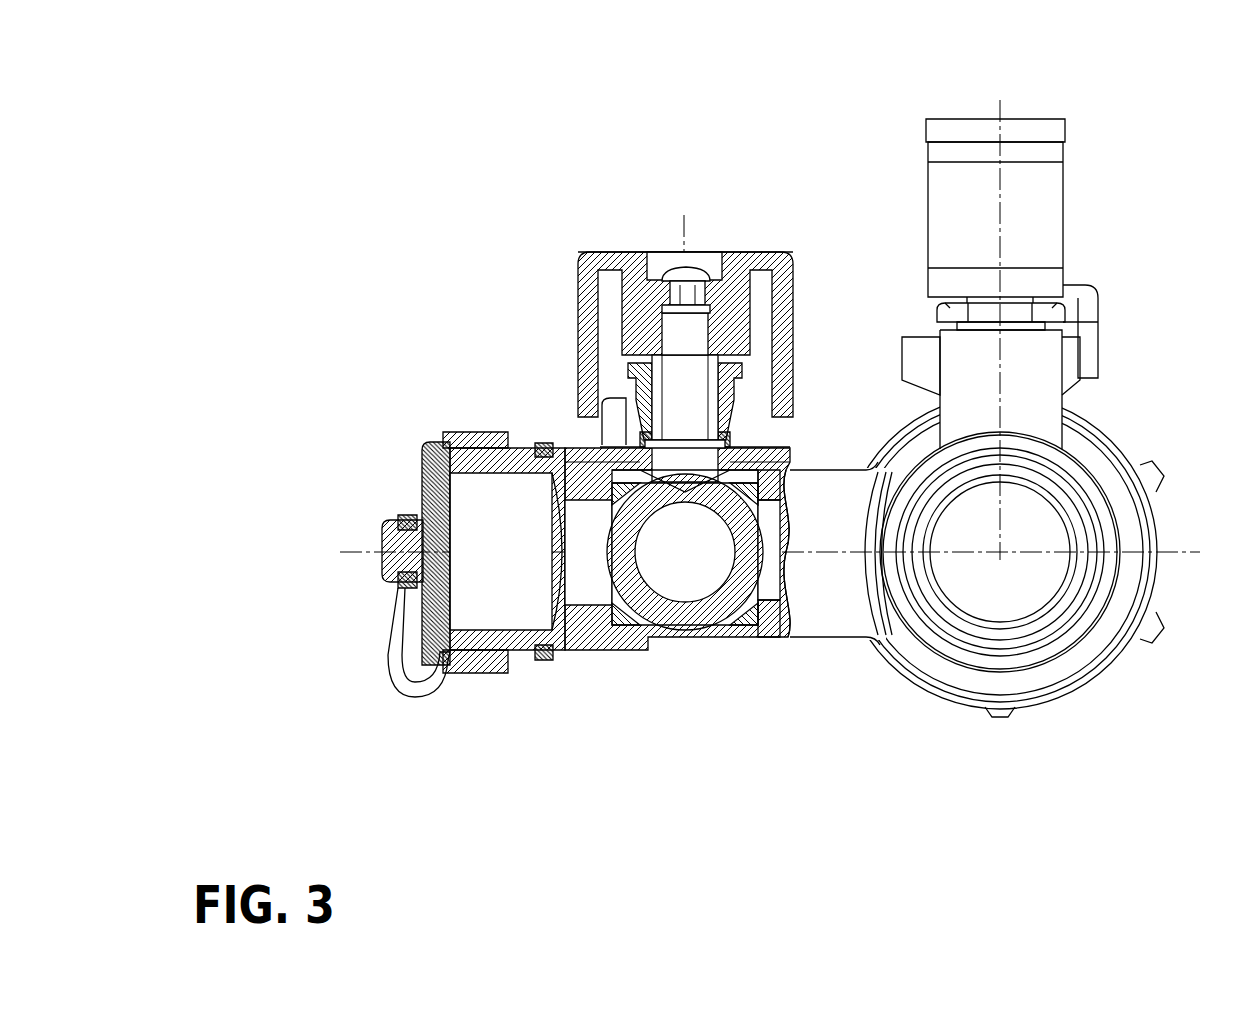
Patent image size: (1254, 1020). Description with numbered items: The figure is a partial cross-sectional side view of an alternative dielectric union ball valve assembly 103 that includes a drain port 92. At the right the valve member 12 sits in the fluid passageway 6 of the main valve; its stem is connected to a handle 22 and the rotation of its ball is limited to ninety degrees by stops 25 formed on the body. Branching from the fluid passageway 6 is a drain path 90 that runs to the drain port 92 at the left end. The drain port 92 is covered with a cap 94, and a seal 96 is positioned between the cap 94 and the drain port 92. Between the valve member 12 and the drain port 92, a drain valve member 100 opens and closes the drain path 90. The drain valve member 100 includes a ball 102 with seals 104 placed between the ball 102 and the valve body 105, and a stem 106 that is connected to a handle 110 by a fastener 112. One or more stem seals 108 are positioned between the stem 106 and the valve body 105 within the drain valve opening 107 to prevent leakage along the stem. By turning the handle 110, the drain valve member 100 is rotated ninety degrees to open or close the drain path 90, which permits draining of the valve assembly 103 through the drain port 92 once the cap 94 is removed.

The fluid passageway 6 is at (1025, 585).
The valve member 12 is at (1040, 275).
The handle 22 is at (1045, 128).
The stops 25 is at (1075, 378).
The drain path 90 is at (770, 592).
The drain port 92 is at (515, 658).
The cap 94 is at (477, 668).
The seal 96 is at (428, 468).
The drain valve member 100 is at (703, 427).
The ball 102 is at (680, 618).
The valve assembly 103 is at (948, 78).
The seals 104 is at (597, 443).
The valve body 105 is at (838, 593).
The stem 106 is at (668, 325).
The drain valve opening 107 is at (723, 413).
The stem seals 108 is at (625, 395).
The handle 110 is at (762, 258).
The fastener 112 is at (697, 268).